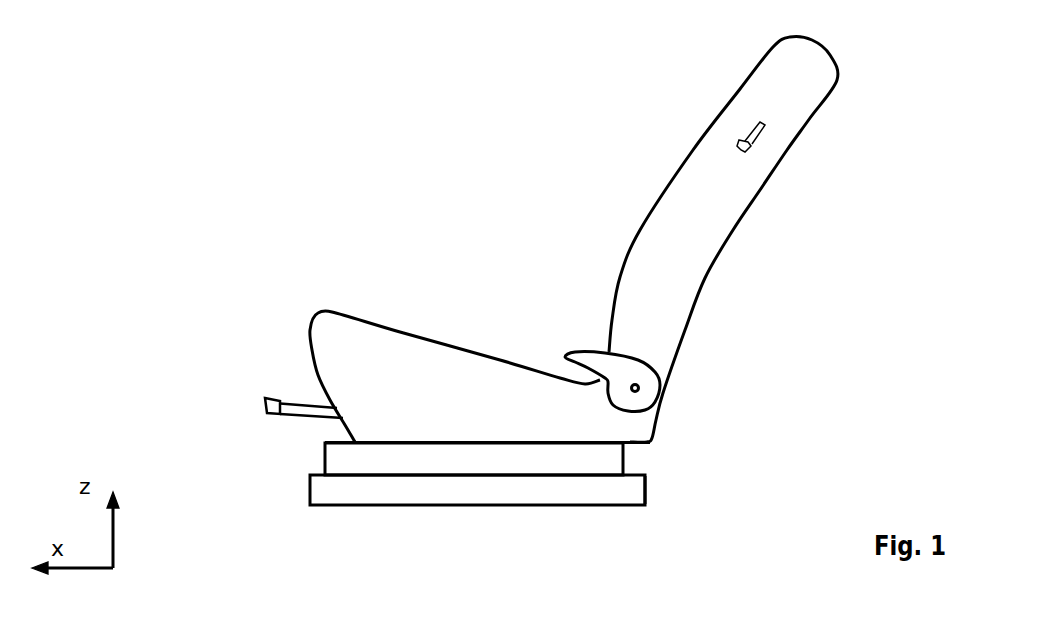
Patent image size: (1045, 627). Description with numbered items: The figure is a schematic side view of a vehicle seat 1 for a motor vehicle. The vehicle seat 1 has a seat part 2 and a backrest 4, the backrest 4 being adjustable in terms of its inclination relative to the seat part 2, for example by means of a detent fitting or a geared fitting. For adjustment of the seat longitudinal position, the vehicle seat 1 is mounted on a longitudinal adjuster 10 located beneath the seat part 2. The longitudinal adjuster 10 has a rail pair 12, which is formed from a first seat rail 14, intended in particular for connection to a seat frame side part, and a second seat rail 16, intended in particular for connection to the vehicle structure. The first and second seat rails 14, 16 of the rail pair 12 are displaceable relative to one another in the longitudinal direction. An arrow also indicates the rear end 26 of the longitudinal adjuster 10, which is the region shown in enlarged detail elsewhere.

The vehicle seat 1 is at (390, 112).
The seat part 2 is at (438, 367).
The backrest 4 is at (688, 177).
The longitudinal adjuster 10 is at (287, 477).
The rail pair 12 is at (593, 448).
The first seat rail 14 is at (605, 462).
The second seat rail 16 is at (605, 493).
The rear end 26 is at (753, 478).